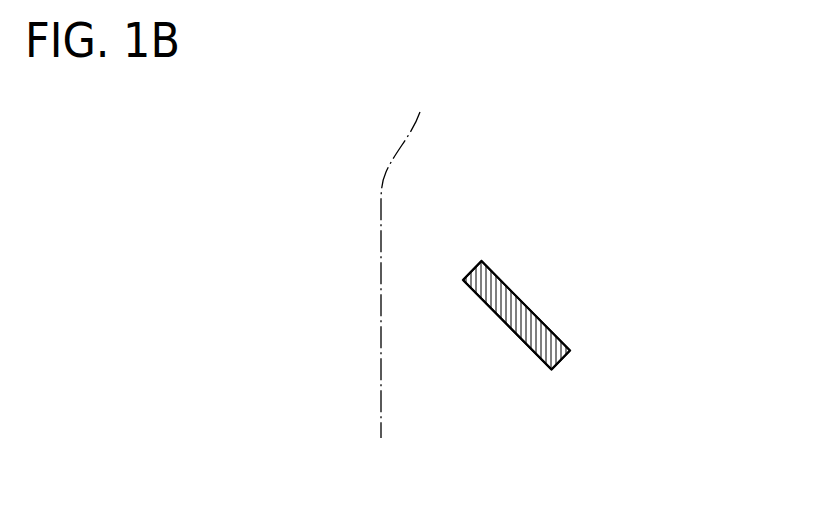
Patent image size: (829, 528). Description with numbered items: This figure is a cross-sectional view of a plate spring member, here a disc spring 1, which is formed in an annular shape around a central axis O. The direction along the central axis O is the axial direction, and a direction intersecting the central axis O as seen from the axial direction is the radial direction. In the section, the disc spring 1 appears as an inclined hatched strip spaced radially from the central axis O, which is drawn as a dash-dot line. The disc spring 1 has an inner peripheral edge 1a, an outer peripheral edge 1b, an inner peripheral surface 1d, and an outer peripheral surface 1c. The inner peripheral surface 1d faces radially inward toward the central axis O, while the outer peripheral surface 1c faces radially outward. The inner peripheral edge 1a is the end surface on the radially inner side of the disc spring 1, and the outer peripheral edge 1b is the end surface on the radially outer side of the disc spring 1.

The central axis O is at (404, 259).
The disc spring 1 is at (588, 212).
The inner peripheral edge 1a is at (467, 277).
The outer peripheral edge 1b is at (566, 360).
The outer peripheral surface 1c is at (527, 304).
The inner peripheral surface 1d is at (507, 328).